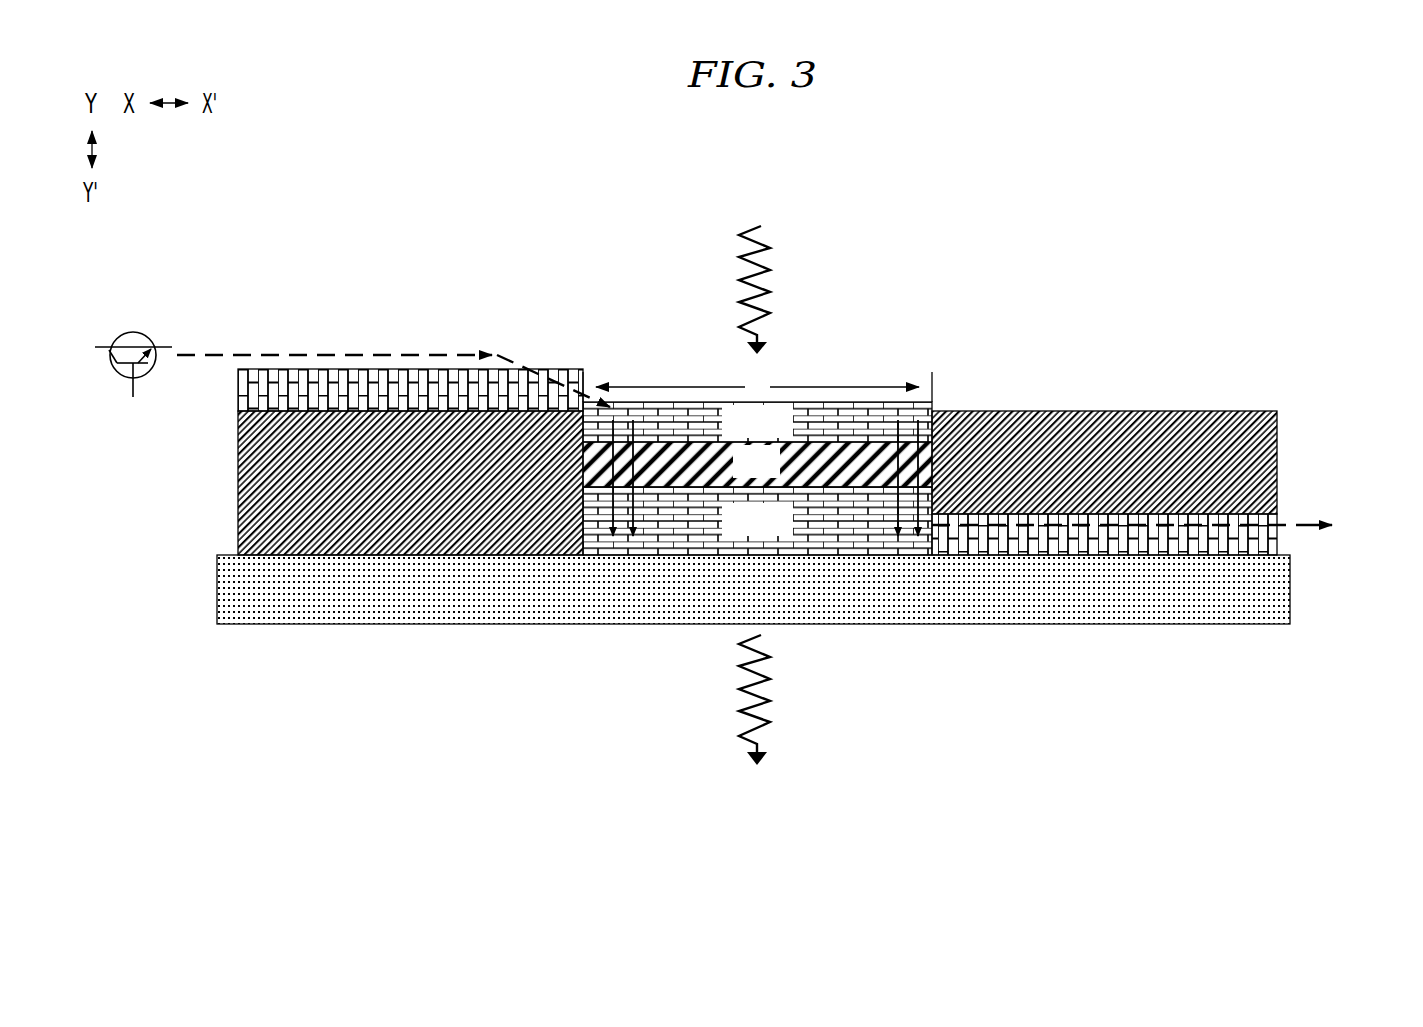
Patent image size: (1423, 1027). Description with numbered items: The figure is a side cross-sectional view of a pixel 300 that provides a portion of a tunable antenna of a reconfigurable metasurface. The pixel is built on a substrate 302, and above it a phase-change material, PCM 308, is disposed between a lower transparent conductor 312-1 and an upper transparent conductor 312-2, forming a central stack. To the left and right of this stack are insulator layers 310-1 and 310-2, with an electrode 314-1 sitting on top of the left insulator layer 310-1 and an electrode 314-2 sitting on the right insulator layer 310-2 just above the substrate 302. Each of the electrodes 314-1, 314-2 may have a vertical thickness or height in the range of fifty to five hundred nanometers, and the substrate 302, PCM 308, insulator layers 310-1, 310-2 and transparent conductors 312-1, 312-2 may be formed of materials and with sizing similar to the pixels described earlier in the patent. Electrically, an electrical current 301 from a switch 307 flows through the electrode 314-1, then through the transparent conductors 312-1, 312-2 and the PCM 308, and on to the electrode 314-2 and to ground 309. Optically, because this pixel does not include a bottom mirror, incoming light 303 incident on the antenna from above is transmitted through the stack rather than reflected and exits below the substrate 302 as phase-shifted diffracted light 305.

The pixel 300 is at (773, 131).
The electrical current 301 is at (387, 342).
The substrate 302 is at (217, 587).
The incoming light 303 is at (773, 217).
The phase-shifted diffracted light 305 is at (773, 829).
The switch 307 is at (100, 323).
The PCM 308 is at (773, 476).
The ground 309 is at (1387, 552).
The insulator layer 310-1 is at (238, 482).
The insulator layer 310-2 is at (1277, 441).
The transparent conductor 312-1 is at (787, 534).
The transparent conductor 312-2 is at (787, 436).
The electrode 314-1 is at (238, 390).
The electrode 314-2 is at (1277, 538).